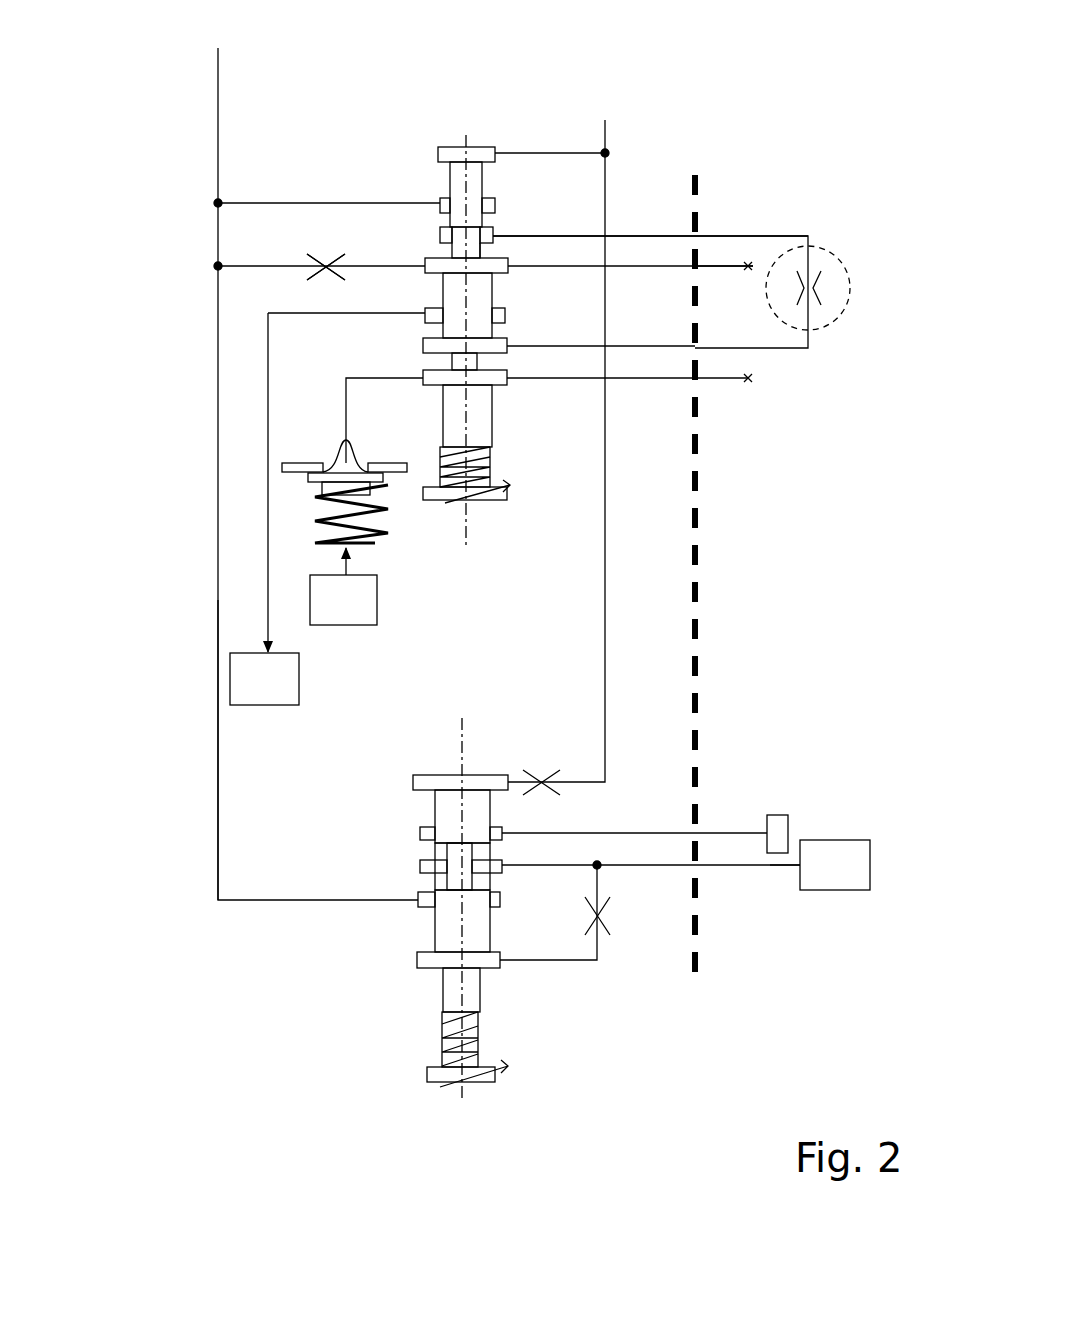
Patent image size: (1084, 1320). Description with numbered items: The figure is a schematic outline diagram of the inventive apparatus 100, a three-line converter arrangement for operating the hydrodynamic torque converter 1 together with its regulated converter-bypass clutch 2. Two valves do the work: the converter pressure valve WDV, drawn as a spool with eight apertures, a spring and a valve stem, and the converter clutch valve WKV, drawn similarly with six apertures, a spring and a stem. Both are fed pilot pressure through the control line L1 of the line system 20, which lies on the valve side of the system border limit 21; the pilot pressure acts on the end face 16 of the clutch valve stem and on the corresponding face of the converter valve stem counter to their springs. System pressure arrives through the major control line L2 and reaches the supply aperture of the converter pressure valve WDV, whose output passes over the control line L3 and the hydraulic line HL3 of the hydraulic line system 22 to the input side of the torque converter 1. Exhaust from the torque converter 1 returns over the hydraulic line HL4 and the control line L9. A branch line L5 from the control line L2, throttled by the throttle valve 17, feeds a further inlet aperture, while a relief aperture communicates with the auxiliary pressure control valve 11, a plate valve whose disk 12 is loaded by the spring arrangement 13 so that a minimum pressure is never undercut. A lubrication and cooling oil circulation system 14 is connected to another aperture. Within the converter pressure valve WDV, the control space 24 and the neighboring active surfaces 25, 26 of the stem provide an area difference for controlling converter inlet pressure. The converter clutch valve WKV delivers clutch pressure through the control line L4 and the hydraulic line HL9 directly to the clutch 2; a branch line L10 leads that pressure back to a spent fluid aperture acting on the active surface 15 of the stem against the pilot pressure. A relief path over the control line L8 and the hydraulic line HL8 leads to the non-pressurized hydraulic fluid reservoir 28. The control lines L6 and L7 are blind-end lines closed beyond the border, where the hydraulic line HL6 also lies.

The inventive apparatus 100 is at (215, 963).
The hydrodynamic torque converter 1 is at (862, 303).
The regulated converter-bypass clutch 2 is at (840, 896).
The auxiliary pressure control valve 11 is at (320, 455).
The disk 12 is at (325, 478).
The spring arrangement 13 is at (335, 545).
The lubrication and cooling oil circulation system 14 is at (240, 693).
The active surface 15 is at (483, 975).
The end face of the valve stem 16 is at (477, 774).
The throttle valve 17 is at (300, 282).
The line system 20 is at (637, 958).
The system border limit 21 is at (697, 950).
The hydraulic line system 22 is at (786, 873).
The control space 24 is at (482, 253).
The active surface 25 is at (495, 237).
The active surface 26 is at (428, 272).
The hydraulic fluid reservoir 28 is at (350, 605).
The control line L1 is at (608, 125).
The major control line L2 is at (216, 450).
The control line L3 is at (643, 236).
The control line L4 is at (655, 866).
The branch line L5 is at (284, 268).
The control line L6 is at (655, 267).
The control line L7 is at (660, 381).
The control line L8 is at (665, 832).
The control line L9 is at (650, 349).
The control line L10 is at (575, 961).
The hydraulic line HL3 is at (748, 236).
The hydraulic line HL4 is at (740, 350).
The hydraulic line HL6 is at (735, 267).
The hydraulic line HL8 is at (720, 832).
The hydraulic line HL9 is at (733, 866).
The converter pressure valve WDV is at (486, 136).
The converter clutch valve WKV is at (449, 1096).